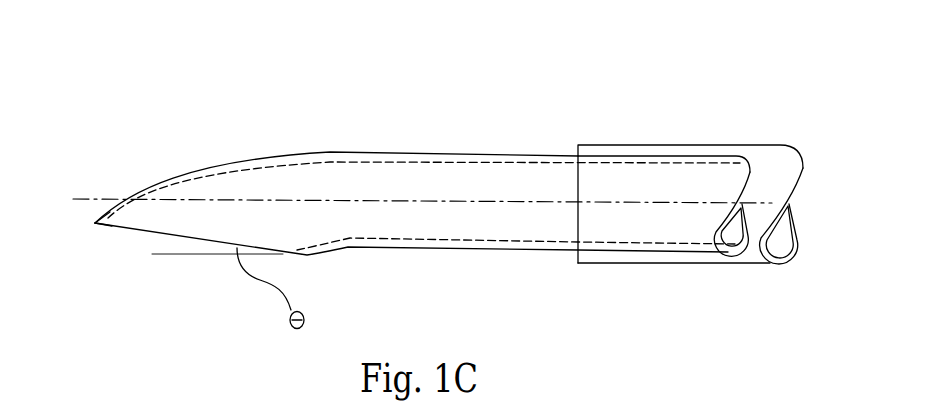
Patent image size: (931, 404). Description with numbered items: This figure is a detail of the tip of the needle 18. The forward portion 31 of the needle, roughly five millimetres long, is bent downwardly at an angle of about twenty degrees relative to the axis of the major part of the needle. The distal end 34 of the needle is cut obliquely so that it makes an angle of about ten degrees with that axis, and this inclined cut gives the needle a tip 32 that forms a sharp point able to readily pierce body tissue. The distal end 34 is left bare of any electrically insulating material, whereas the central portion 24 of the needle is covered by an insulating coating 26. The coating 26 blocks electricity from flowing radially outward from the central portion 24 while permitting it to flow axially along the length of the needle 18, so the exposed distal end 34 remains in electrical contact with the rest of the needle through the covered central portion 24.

The needle 18 is at (629, 108).
The central portion 24 is at (682, 250).
The insulating coating 26 is at (783, 138).
The forward portion of the needle 31 is at (195, 133).
The tip 32 is at (80, 236).
The distal end 34 is at (137, 240).